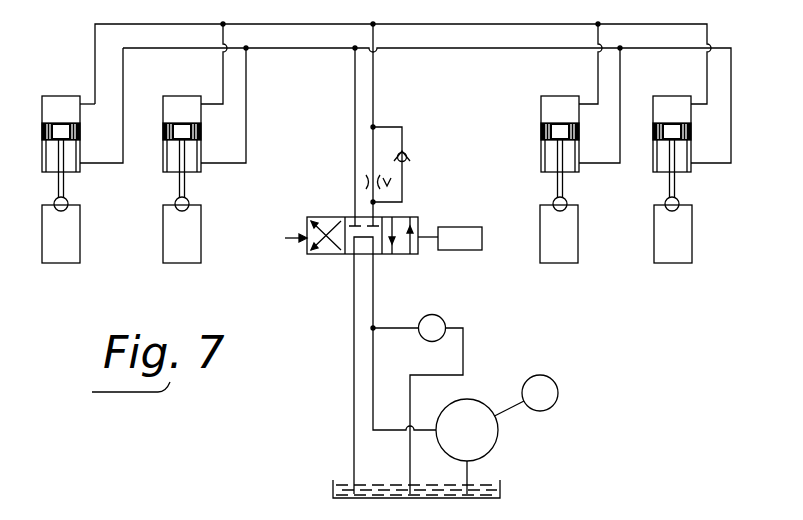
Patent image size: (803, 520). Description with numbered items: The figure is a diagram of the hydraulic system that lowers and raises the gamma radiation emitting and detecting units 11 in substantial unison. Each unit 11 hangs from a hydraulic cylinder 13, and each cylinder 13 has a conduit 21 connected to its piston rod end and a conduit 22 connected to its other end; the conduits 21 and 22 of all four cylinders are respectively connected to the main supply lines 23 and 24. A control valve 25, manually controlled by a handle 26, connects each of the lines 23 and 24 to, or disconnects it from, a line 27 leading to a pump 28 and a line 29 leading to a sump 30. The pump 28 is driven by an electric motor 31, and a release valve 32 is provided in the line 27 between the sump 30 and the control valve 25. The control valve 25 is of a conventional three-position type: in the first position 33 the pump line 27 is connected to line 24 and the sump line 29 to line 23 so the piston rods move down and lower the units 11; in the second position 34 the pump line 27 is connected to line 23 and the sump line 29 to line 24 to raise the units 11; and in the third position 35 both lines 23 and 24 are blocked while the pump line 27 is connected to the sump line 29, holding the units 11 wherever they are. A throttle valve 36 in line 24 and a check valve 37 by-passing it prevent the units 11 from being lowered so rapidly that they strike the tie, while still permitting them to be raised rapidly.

The unit 11 is at (42, 240).
The hydraulic cylinder 13 is at (42, 110).
The conduit 21 is at (100, 163).
The conduit 22 is at (95, 48).
The main supply line 23 is at (355, 93).
The main supply line 24 is at (376, 92).
The control valve 25 is at (282, 239).
The handle 26 is at (462, 250).
The line 27 is at (376, 286).
The pump 28 is at (467, 400).
The line 29 is at (354, 325).
The sump 30 is at (380, 490).
The electric motor 31 is at (559, 384).
The release valve 32 is at (444, 319).
The first position 33 is at (372, 236).
The second position 34 is at (330, 256).
The third position 35 is at (350, 217).
The throttle valve 36 is at (391, 182).
The check valve 37 is at (410, 156).